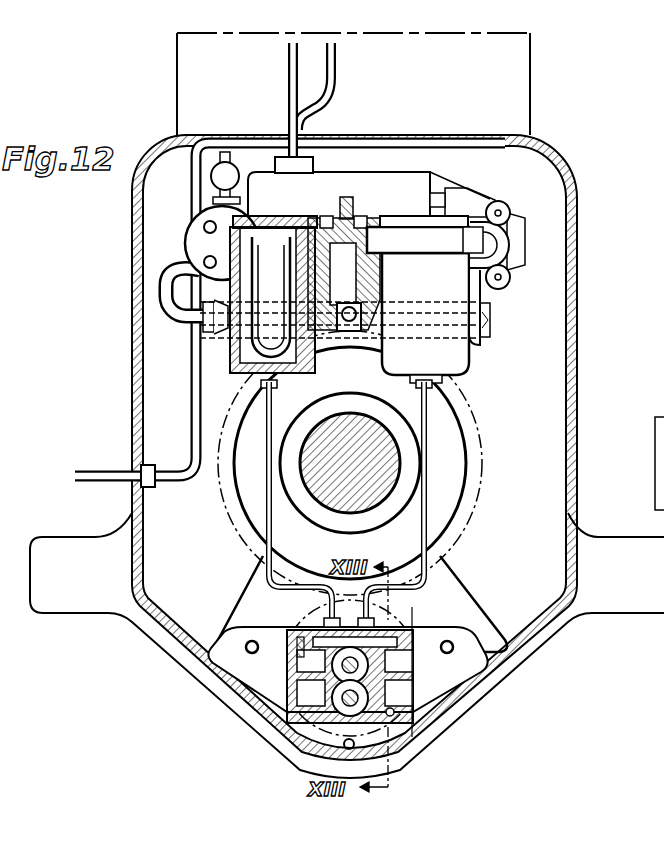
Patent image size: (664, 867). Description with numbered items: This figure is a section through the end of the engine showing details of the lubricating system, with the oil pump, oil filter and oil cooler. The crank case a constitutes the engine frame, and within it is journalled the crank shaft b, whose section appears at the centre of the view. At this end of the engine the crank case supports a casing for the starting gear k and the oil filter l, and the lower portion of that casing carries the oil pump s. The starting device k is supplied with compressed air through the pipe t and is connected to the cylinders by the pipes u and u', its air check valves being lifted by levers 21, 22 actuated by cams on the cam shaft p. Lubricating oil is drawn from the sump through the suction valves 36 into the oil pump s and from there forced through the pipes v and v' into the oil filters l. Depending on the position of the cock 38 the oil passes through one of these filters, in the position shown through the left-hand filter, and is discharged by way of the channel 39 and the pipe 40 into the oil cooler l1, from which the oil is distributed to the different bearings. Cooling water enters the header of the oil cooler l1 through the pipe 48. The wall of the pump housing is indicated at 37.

The crank case a is at (573, 373).
The crank shaft b is at (333, 438).
The starting gear k is at (357, 183).
The oil filter l is at (428, 299).
The oil cooler l1 is at (204, 241).
The cam shaft p is at (497, 243).
The oil pump s is at (433, 672).
The pipe t is at (242, 138).
The pipe u is at (336, 86).
The pipe u' is at (268, 100).
The pipe v is at (300, 503).
The pipe v' is at (409, 503).
The lever 21 is at (478, 282).
The lever 22 is at (453, 207).
The suction valves 36 is at (290, 693).
The pump wall 37 is at (287, 657).
The cock 38 is at (341, 212).
The channel 39 is at (266, 322).
The pipe 40 is at (161, 283).
The pipe 48 is at (213, 176).